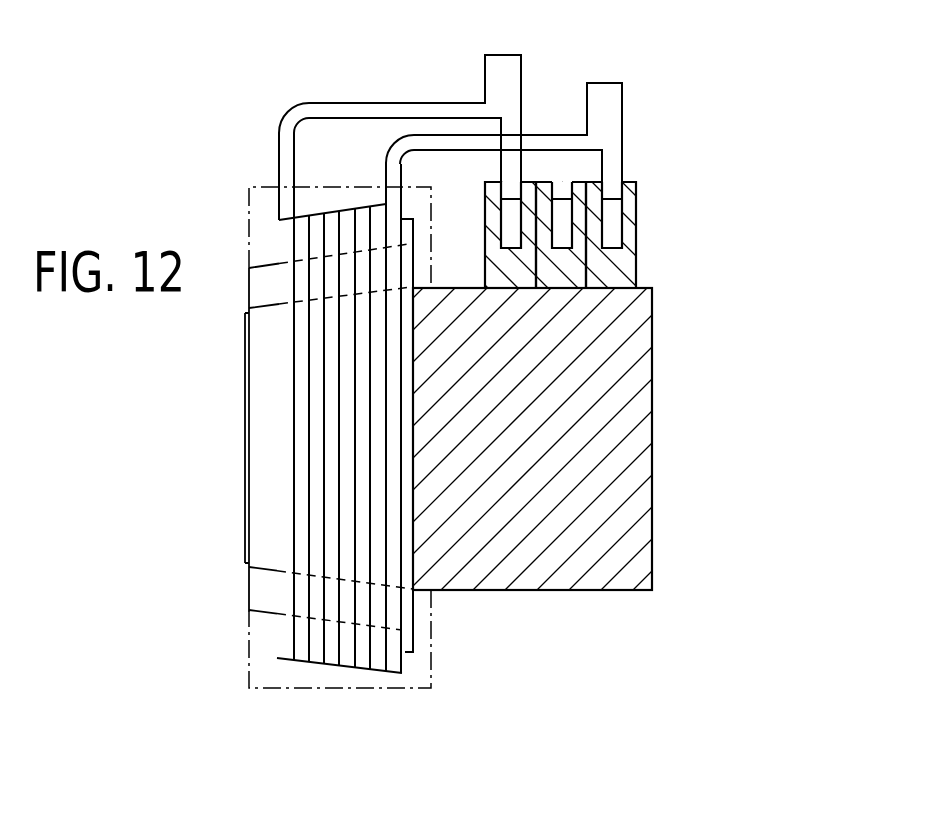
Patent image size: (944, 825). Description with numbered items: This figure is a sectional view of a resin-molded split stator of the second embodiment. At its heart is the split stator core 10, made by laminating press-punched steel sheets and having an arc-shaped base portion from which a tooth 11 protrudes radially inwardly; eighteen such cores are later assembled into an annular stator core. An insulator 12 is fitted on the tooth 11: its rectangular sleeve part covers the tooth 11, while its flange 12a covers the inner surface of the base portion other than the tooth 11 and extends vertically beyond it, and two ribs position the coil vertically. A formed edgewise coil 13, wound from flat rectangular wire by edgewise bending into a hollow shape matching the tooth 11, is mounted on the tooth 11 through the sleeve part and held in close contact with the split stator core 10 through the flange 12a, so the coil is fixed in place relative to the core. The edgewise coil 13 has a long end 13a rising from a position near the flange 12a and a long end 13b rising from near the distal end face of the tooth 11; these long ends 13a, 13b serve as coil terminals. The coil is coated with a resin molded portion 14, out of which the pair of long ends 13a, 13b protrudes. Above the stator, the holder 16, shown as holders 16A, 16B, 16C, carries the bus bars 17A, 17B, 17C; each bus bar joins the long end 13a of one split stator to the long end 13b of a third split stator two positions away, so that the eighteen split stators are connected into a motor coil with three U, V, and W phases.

The split stator core 10 is at (640, 473).
The tooth 11 is at (246, 442).
The insulator 12 is at (253, 386).
The flange 12a is at (407, 652).
The edgewise coil 13 is at (287, 515).
The long end 13a is at (542, 140).
The long end 13b is at (378, 105).
The resin molded portion 14 is at (254, 187).
The holder 16 is at (644, 234).
The holder 16A is at (627, 221).
The holder 16B is at (557, 267).
The holder 16C is at (513, 290).
The bus bar 17A is at (610, 220).
The bus bar 17B is at (557, 223).
The bus bar 17C is at (510, 220).